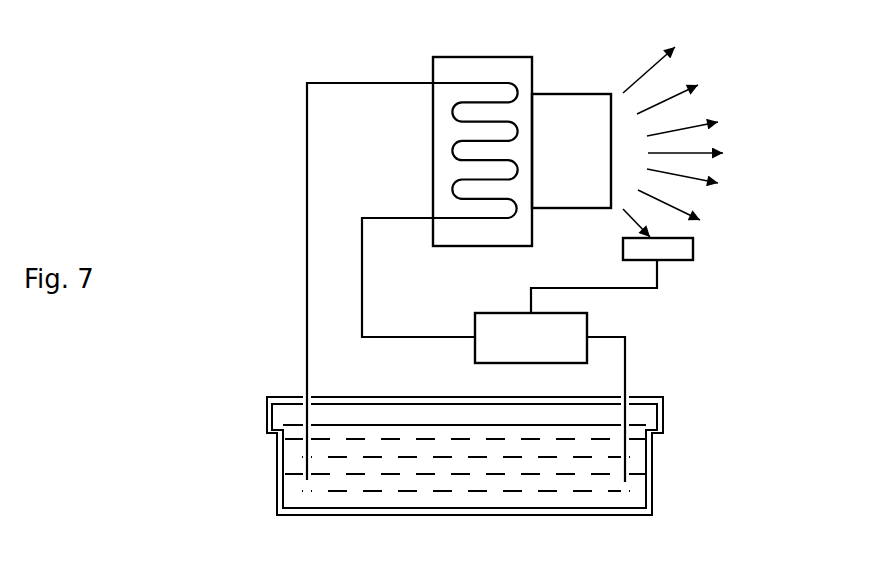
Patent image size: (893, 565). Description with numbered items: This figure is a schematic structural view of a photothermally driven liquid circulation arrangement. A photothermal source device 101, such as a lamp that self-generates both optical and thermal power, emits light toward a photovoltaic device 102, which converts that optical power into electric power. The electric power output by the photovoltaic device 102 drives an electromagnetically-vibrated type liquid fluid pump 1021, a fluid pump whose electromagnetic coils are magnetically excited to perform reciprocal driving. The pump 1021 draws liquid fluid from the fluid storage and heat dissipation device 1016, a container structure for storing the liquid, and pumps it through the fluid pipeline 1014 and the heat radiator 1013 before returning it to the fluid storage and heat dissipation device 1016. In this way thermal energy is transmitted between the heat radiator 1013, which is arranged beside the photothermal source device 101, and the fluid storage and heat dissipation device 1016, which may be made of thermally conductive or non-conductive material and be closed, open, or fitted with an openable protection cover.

The photothermal source device 101 is at (577, 110).
The photovoltaic device 102 is at (697, 248).
The heat radiator 1013 is at (432, 177).
The fluid pipeline 1014 is at (393, 82).
The fluid storage and heat dissipation device 1016 is at (650, 465).
The electromagnetically-vibrated type liquid fluid pump 1021 is at (513, 312).